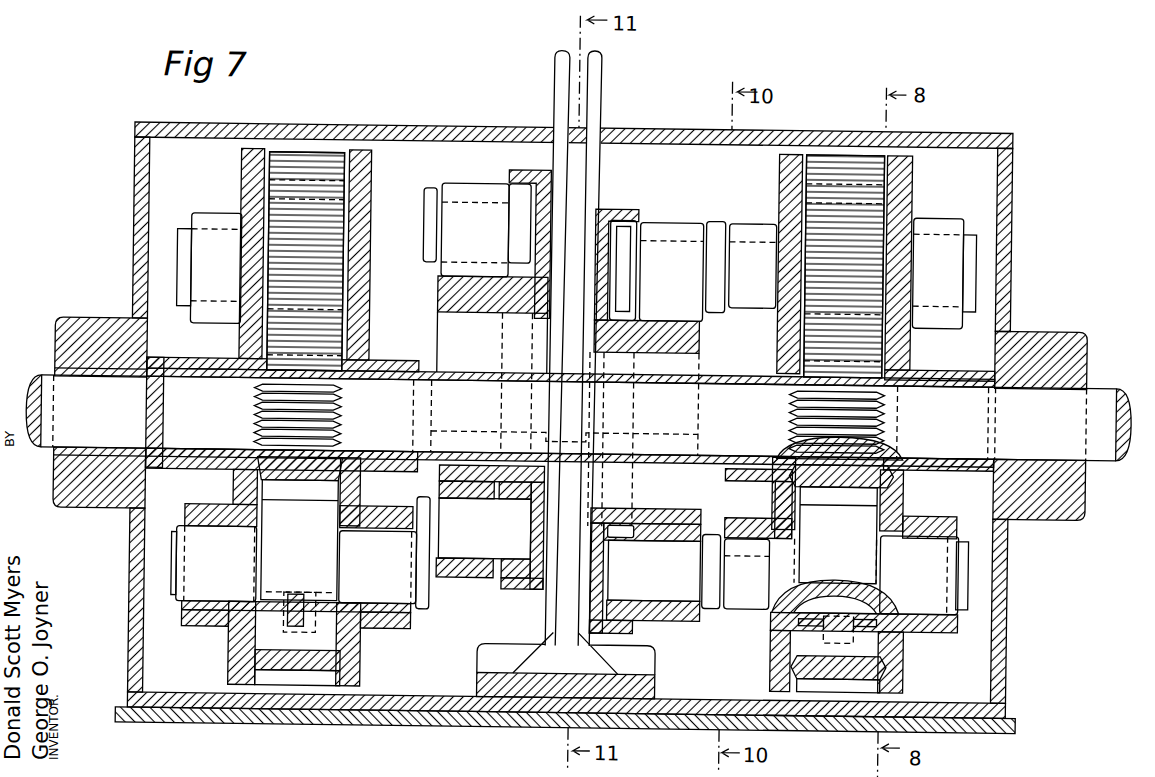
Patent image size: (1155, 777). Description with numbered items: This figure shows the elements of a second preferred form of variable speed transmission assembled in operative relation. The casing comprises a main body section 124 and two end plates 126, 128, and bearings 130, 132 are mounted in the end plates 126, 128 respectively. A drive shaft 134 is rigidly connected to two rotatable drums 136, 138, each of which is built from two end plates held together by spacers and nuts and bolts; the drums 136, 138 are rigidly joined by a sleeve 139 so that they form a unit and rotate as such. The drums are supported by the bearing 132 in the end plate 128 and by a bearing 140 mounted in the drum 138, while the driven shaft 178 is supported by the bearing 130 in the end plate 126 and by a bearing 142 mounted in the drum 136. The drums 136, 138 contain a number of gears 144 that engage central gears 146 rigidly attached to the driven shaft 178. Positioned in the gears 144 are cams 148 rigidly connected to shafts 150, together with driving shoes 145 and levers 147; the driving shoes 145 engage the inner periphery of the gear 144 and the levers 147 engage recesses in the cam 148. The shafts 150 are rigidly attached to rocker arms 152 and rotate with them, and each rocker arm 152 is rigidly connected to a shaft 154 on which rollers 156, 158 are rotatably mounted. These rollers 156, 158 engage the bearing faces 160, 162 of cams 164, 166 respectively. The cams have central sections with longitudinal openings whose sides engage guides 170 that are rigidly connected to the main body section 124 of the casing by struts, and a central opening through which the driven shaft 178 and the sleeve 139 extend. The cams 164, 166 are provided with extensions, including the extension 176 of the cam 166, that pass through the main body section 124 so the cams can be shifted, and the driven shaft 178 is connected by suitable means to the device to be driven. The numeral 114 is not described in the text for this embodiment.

The shift fork tine 114 is at (558, 57).
The extension 176 is at (598, 75).
The main body section 124 is at (438, 124).
The end plate 126 is at (1016, 218).
The end plate 128 is at (135, 189).
The bearing 130 is at (1091, 376).
The bearing 132 is at (60, 450).
The drive shaft 134 is at (75, 411).
The rotatable drum 136 is at (242, 187).
The rotatable drum 138 is at (914, 186).
The sleeve 139 is at (581, 334).
The bearing 140 is at (995, 478).
The bearing 142 is at (185, 355).
The gear 144 is at (864, 324).
The driving shoe 145 is at (911, 640).
The central gear 146 is at (327, 415).
The lever 147 is at (871, 598).
The cam 148 is at (782, 624).
The shaft 150 is at (195, 271).
The rocker arm 152 is at (431, 201).
The shaft 154 is at (485, 535).
The roller 156 is at (466, 179).
The roller 158 is at (520, 181).
The bearing face 160 is at (482, 306).
The bearing face 162 is at (523, 160).
The cam 164 is at (527, 305).
The cam 166 is at (646, 346).
The guide 170 is at (707, 414).
The driven shaft 178 is at (992, 423).